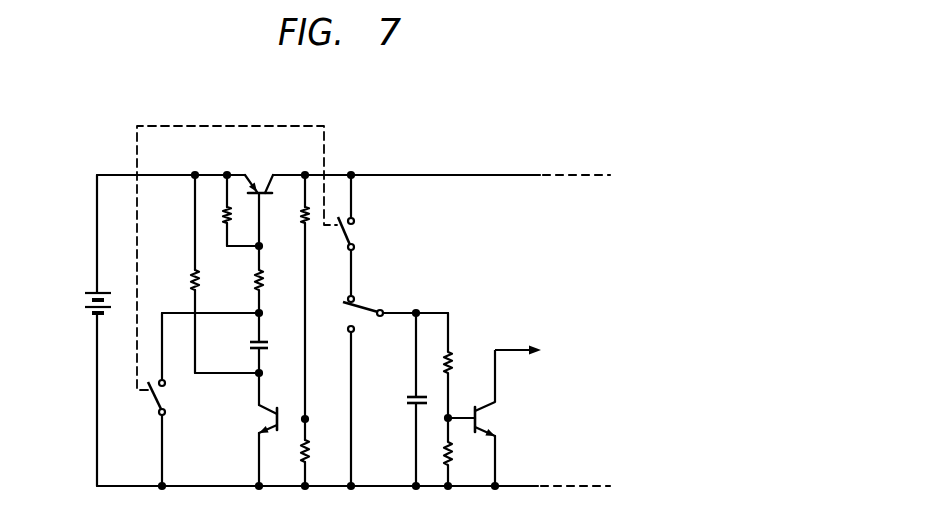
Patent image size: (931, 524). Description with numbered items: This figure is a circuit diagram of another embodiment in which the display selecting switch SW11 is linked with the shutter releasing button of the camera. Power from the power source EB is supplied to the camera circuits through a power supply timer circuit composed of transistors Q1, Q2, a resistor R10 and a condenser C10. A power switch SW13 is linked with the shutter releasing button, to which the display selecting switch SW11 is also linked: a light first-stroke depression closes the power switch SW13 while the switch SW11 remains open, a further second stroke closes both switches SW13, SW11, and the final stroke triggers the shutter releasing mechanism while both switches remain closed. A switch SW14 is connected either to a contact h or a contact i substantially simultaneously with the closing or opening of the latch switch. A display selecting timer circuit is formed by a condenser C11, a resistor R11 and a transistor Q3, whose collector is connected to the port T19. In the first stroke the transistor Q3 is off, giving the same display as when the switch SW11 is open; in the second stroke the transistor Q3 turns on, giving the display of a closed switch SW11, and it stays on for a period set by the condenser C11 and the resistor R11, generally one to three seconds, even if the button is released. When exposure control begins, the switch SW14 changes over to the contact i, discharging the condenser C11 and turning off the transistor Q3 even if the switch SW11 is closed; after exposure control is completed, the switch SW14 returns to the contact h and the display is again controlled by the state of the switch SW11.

The power source EB is at (85, 300).
The transistor Q1 is at (256, 186).
The transistor Q2 is at (270, 415).
The transistor Q3 is at (480, 417).
The resistor R10 is at (255, 279).
The resistor R11 is at (452, 362).
The condenser C10 is at (250, 345).
The condenser C11 is at (407, 398).
The display selecting switch SW11 is at (356, 232).
The power switch SW13 is at (163, 395).
The switch SW14 is at (366, 308).
The contact h is at (348, 297).
The contact i is at (347, 330).
The port T19 is at (537, 370).